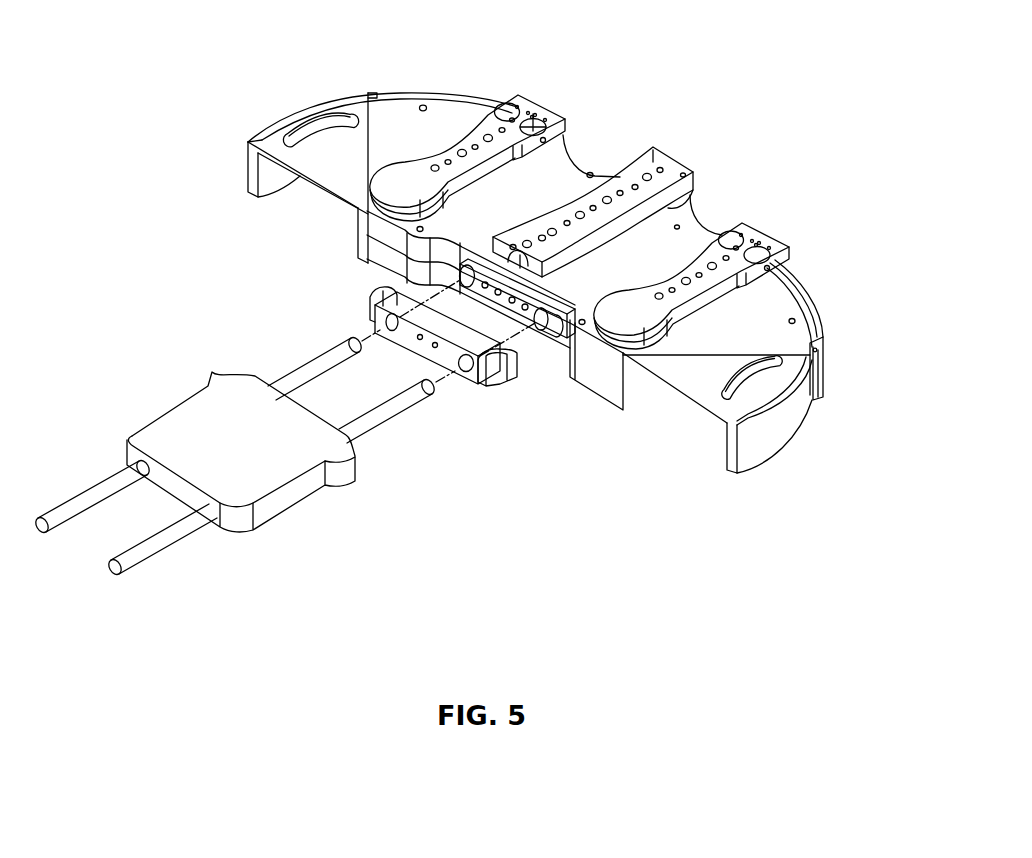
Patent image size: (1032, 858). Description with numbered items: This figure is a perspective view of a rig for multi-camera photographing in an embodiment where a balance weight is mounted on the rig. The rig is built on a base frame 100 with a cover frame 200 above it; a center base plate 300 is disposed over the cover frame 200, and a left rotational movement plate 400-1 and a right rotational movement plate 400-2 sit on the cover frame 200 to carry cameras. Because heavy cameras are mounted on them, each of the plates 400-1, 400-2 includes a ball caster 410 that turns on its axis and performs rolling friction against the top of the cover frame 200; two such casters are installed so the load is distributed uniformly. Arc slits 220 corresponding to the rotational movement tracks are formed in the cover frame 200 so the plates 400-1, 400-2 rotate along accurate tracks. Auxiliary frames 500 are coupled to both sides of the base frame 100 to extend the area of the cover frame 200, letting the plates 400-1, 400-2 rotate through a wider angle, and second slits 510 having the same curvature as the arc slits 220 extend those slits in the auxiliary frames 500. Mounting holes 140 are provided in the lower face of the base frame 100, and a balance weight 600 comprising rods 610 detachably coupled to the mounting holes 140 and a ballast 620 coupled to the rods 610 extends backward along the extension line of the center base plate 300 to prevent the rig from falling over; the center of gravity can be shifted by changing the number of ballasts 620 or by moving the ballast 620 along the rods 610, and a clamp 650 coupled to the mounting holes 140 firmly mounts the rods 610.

The base frame 100 is at (604, 370).
The mounting holes 140 is at (544, 322).
The cover frame 200 is at (398, 124).
The arc slits 220 is at (823, 337).
The center base plate 300 is at (656, 150).
The left rotational movement plate 400-1 is at (486, 118).
The right rotational movement plate 400-2 is at (762, 236).
The ball caster 410 is at (542, 113).
The auxiliary frames 500 is at (763, 437).
The second slits 510 is at (790, 388).
The balance weight 600 is at (235, 485).
The rods 610 is at (390, 410).
The ballast 620 is at (298, 492).
The clamp 650 is at (366, 305).